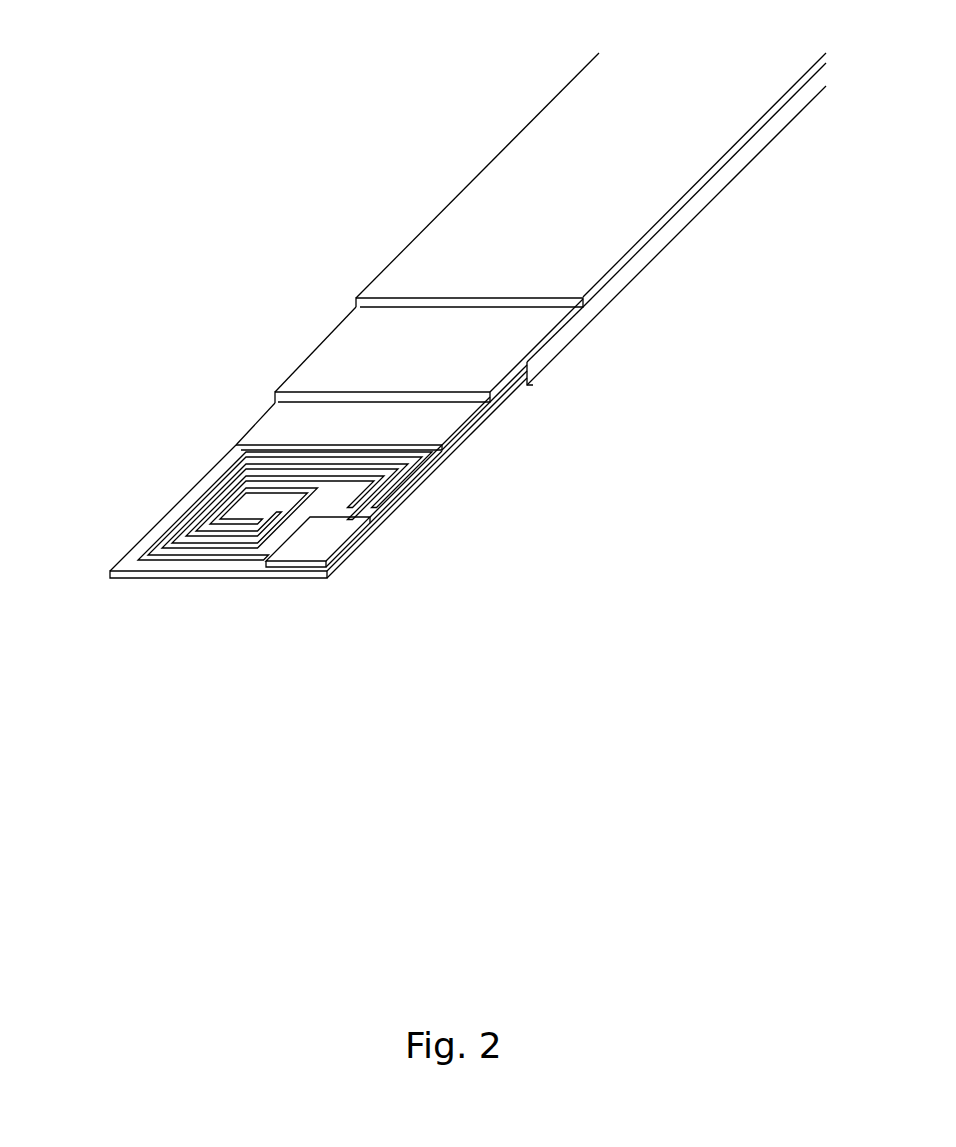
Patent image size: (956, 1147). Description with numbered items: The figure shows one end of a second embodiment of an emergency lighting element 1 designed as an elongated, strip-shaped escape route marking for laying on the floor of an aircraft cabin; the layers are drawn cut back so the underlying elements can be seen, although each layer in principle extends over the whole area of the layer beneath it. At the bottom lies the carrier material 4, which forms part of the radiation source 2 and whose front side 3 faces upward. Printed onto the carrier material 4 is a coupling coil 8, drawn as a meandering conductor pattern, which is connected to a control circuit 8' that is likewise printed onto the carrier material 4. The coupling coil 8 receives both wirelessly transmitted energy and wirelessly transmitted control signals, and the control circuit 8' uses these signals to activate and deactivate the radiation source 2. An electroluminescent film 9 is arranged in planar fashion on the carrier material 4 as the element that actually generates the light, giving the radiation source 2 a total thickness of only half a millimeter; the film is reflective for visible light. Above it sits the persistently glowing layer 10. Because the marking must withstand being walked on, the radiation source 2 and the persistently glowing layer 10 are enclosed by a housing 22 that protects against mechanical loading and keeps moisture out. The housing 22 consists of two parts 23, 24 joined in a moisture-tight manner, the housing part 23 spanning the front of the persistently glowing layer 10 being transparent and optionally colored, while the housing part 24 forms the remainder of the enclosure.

The emergency lighting element 1 is at (218, 246).
The radiation source 2 is at (208, 469).
The front side 3 is at (181, 507).
The carrier material 4 is at (132, 551).
The coupling coil 8 is at (279, 553).
The control circuit 8' is at (285, 545).
The electroluminescent film 9 is at (439, 423).
The persistently glowing layer 10 is at (521, 332).
The housing 22 is at (466, 130).
The housing part 23 is at (713, 121).
The housing part 24 is at (695, 205).